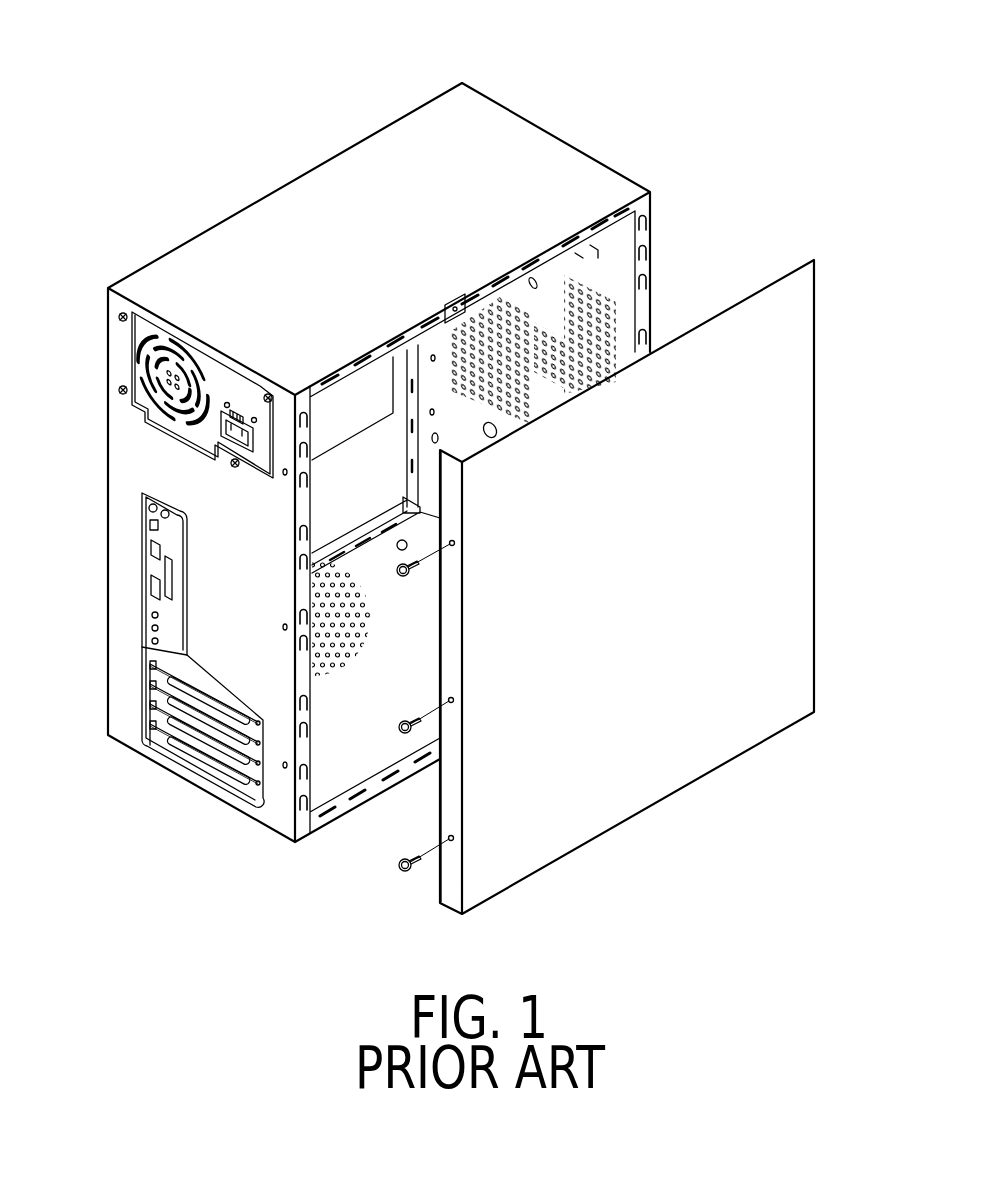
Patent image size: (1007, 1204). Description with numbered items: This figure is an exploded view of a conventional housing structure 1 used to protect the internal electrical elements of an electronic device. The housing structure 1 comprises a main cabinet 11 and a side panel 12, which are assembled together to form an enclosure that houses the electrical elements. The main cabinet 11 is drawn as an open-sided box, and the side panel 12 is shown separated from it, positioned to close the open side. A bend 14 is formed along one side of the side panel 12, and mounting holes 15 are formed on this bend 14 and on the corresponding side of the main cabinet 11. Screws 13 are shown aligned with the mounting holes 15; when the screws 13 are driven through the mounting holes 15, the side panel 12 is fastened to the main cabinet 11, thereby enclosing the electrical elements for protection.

The housing structure 1 is at (178, 46).
The main cabinet 11 is at (520, 155).
The side panel 12 is at (746, 340).
The screws 13 is at (396, 871).
The bend 14 is at (448, 606).
The mounting holes 15 is at (452, 839).